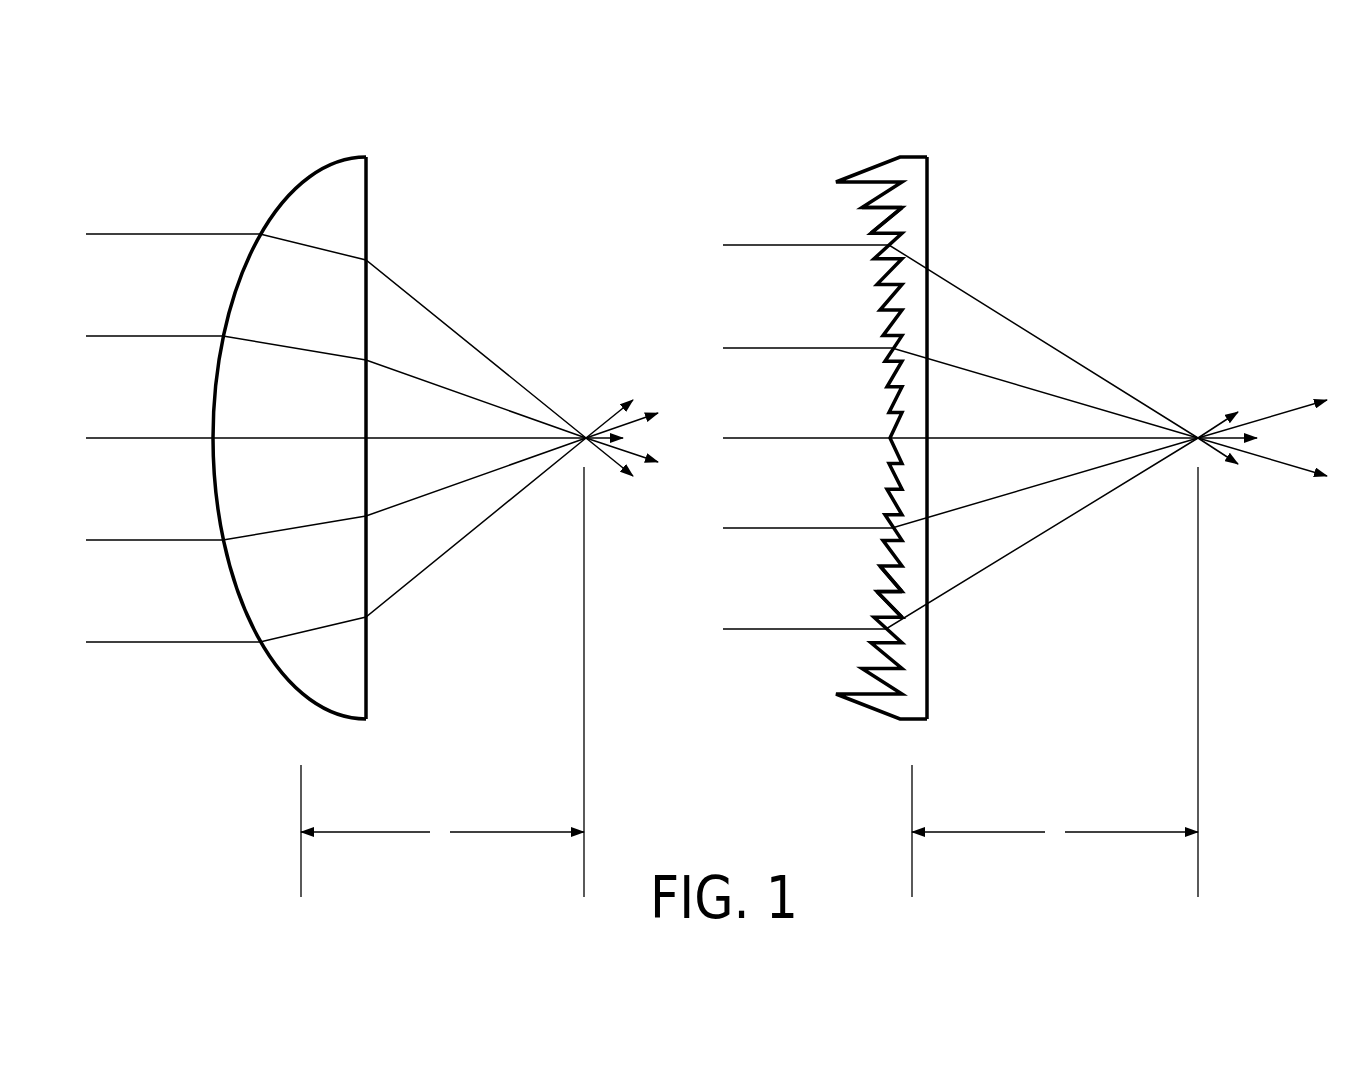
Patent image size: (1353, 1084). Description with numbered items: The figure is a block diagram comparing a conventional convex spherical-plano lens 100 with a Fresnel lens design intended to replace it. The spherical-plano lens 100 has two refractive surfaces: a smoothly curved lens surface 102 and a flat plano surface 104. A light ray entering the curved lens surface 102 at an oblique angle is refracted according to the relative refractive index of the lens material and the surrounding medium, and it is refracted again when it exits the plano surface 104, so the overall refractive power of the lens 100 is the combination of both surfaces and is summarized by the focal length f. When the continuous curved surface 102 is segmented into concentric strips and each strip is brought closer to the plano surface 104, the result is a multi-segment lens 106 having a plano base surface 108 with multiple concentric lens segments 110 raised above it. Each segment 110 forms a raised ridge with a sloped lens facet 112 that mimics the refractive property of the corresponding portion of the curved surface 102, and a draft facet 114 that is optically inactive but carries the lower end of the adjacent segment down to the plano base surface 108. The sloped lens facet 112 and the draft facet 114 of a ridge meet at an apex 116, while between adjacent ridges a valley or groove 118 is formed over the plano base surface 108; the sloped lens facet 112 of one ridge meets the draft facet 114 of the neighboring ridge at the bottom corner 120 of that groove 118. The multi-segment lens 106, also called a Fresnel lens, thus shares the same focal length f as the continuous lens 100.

The convex spherical-plano lens 100 is at (372, 497).
The curved lens surface 102 is at (296, 184).
The plano surface 104 is at (368, 234).
The multi-segment lens 106 is at (1025, 489).
The plano base surface 108 is at (928, 182).
The lens segments 110 is at (890, 200).
The sloped lens facet 112 is at (885, 604).
The draft facet 114 is at (887, 590).
The apex 116 is at (887, 592).
The groove 118 is at (908, 214).
The bottom corner 120 is at (928, 214).